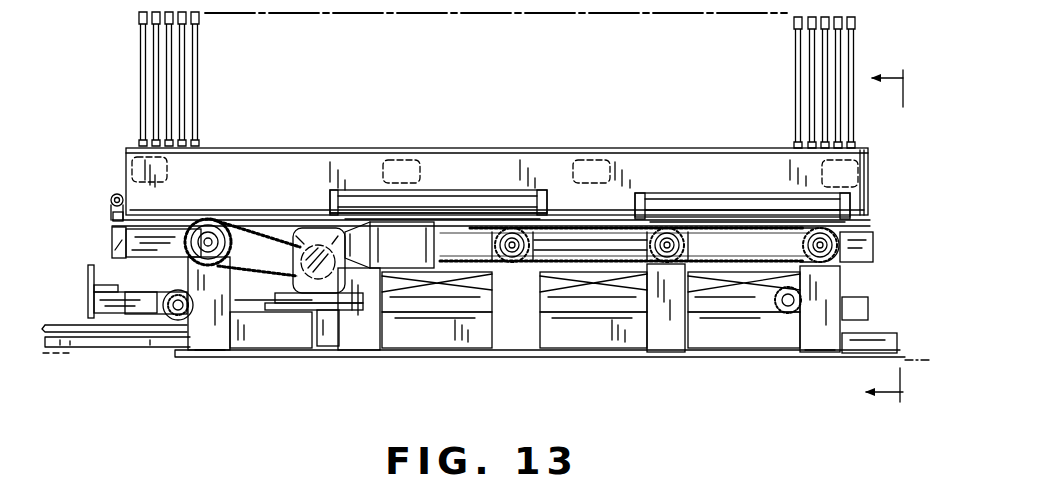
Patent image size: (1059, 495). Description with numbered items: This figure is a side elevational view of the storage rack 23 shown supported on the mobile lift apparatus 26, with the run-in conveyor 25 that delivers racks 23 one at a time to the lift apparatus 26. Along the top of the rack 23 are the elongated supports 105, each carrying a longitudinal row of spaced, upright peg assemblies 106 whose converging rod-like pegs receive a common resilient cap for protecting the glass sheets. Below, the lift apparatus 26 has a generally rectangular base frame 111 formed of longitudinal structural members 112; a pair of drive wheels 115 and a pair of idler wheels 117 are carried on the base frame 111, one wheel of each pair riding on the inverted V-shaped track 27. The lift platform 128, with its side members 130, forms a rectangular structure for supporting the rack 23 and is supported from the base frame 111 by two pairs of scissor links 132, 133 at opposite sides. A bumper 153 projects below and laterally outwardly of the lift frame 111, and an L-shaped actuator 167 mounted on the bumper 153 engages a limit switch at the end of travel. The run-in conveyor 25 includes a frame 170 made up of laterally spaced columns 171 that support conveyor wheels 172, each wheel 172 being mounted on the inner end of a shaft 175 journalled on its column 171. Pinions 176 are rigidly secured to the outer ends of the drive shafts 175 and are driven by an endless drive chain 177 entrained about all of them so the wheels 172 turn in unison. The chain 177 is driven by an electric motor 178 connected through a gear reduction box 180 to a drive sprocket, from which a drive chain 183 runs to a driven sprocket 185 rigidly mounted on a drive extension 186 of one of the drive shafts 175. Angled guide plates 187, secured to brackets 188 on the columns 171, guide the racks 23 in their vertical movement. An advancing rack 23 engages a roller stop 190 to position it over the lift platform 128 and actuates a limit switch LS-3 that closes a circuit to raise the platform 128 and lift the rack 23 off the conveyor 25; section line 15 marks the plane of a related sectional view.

The section line 15- 15 is at (897, 237).
The storage rack 23 is at (874, 178).
The run-in conveyor 25 is at (847, 275).
The mobile lift apparatus 26 is at (96, 244).
The inverted V-shaped track 27 is at (60, 354).
The elongated support 105 is at (318, 148).
The peg assembly 106 is at (204, 71).
The base frame 111 is at (126, 348).
The longitudinal structural member 112 is at (105, 334).
The drive wheel 115 is at (782, 304).
The idler wheel 117 is at (172, 322).
The lift platform 128 is at (153, 225).
The side member 130 is at (156, 252).
The scissor link 132 is at (408, 286).
The scissor link 133 is at (568, 286).
The bumper 153 is at (90, 305).
The L-shaped actuator 167 is at (88, 275).
The frame 170 is at (195, 357).
The column 171 is at (216, 342).
The conveyor wheel 172 is at (630, 250).
The shaft 175 is at (505, 252).
The pinion 176 is at (815, 292).
The endless drive chain 177 is at (556, 226).
The electric motor 178 is at (389, 245).
The gear reduction box 180 is at (318, 247).
The drive chain 183 is at (247, 282).
The driven sprocket 185 is at (223, 236).
The drive extension 186 is at (208, 238).
The angled guide plate 187 is at (538, 192).
The bracket 188 is at (445, 195).
The roller stop 190 is at (116, 194).
The limit switch LS-3 is at (114, 219).